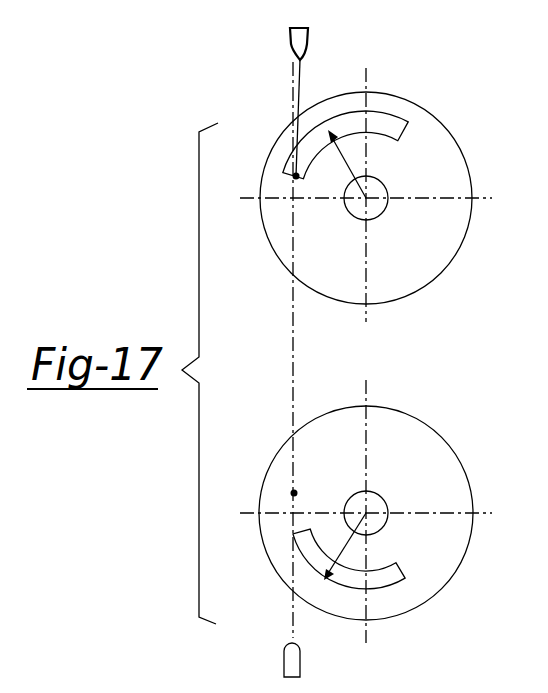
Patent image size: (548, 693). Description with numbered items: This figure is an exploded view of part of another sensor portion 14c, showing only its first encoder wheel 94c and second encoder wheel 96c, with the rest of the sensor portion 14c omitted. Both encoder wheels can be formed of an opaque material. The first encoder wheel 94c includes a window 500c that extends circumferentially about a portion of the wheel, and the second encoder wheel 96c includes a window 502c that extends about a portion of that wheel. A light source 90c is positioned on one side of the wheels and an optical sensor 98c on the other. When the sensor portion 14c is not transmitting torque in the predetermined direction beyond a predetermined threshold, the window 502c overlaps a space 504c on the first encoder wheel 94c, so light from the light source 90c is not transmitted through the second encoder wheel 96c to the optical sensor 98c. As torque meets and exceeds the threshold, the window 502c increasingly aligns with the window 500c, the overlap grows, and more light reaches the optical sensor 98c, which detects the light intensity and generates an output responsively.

The sensor portion 14c is at (182, 454).
The light source 90c is at (287, 42).
The first encoder wheel 94c is at (437, 97).
The second encoder wheel 96c is at (433, 404).
The optical sensor 98c is at (283, 657).
The window 500c is at (350, 128).
The window 502c is at (340, 581).
The space 504c is at (272, 217).